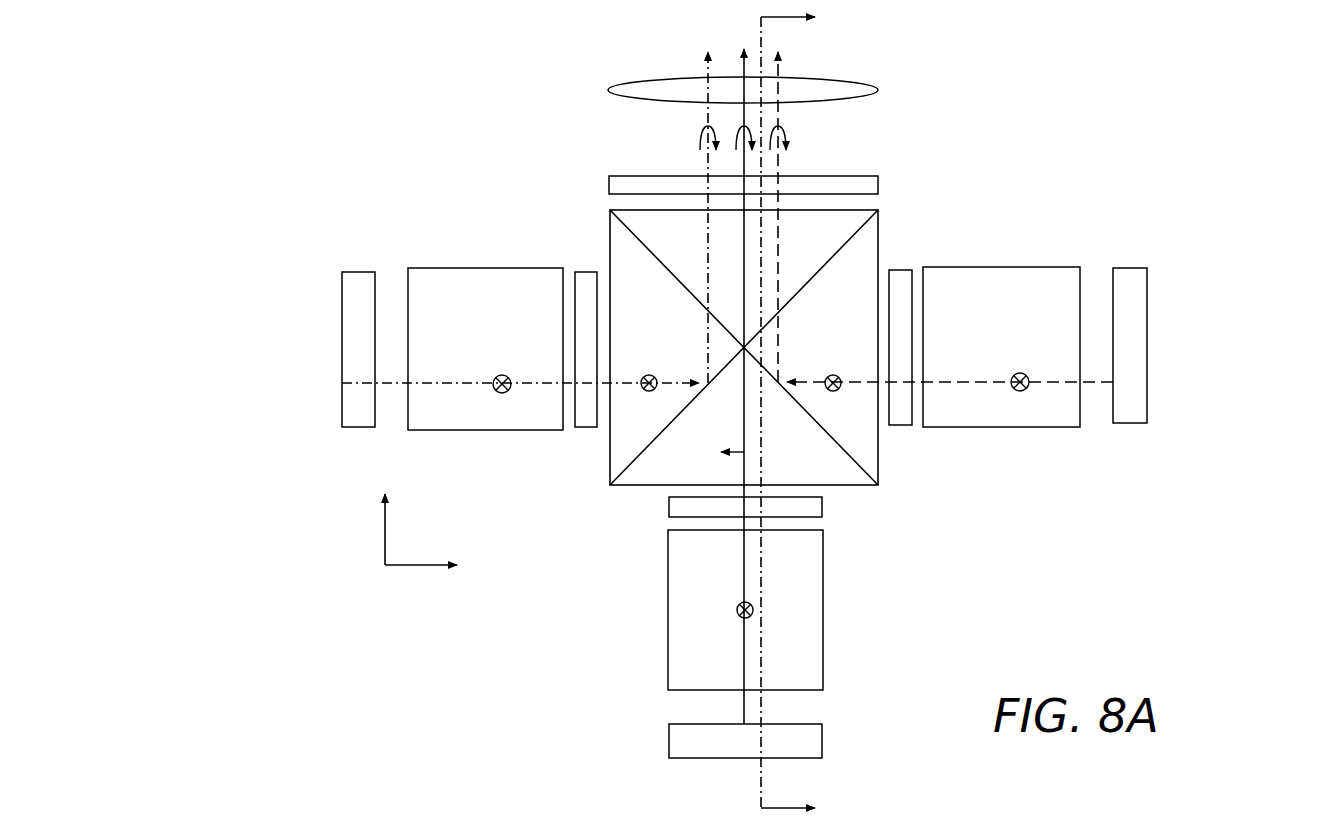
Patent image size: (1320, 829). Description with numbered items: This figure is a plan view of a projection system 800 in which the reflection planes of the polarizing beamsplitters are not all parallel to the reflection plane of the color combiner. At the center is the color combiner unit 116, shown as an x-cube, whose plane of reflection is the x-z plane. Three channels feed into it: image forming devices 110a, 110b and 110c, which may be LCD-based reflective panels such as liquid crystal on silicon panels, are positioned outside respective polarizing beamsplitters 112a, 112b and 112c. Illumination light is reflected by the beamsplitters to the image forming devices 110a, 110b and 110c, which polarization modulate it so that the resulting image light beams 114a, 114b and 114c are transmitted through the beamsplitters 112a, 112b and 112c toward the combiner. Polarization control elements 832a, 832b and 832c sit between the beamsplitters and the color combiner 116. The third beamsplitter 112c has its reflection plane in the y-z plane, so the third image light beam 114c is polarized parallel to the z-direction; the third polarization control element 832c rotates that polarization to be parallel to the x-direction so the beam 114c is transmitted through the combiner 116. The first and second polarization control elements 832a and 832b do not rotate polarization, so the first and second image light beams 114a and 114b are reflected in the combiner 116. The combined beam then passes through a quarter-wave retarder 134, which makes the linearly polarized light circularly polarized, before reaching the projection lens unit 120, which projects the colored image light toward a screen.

The projection system 800 is at (240, 128).
The projection lens unit 120 is at (632, 83).
The quarter-wave retarder 134 is at (866, 176).
The color combiner unit 116 is at (880, 455).
The image forming device 110a is at (342, 300).
The image forming device 110b is at (1144, 330).
The image forming device 110c is at (753, 758).
The polarizing beamsplitter 112a is at (432, 268).
The polarizing beamsplitter 112b is at (1017, 267).
The polarizing beamsplitter 112c is at (668, 623).
The image light beam 114a is at (470, 392).
The image light beam 114b is at (1000, 392).
The image light beam 114c is at (745, 640).
The polarization control element 832a is at (586, 272).
The polarization control element 832b is at (898, 270).
The polarization control element 832c is at (823, 510).